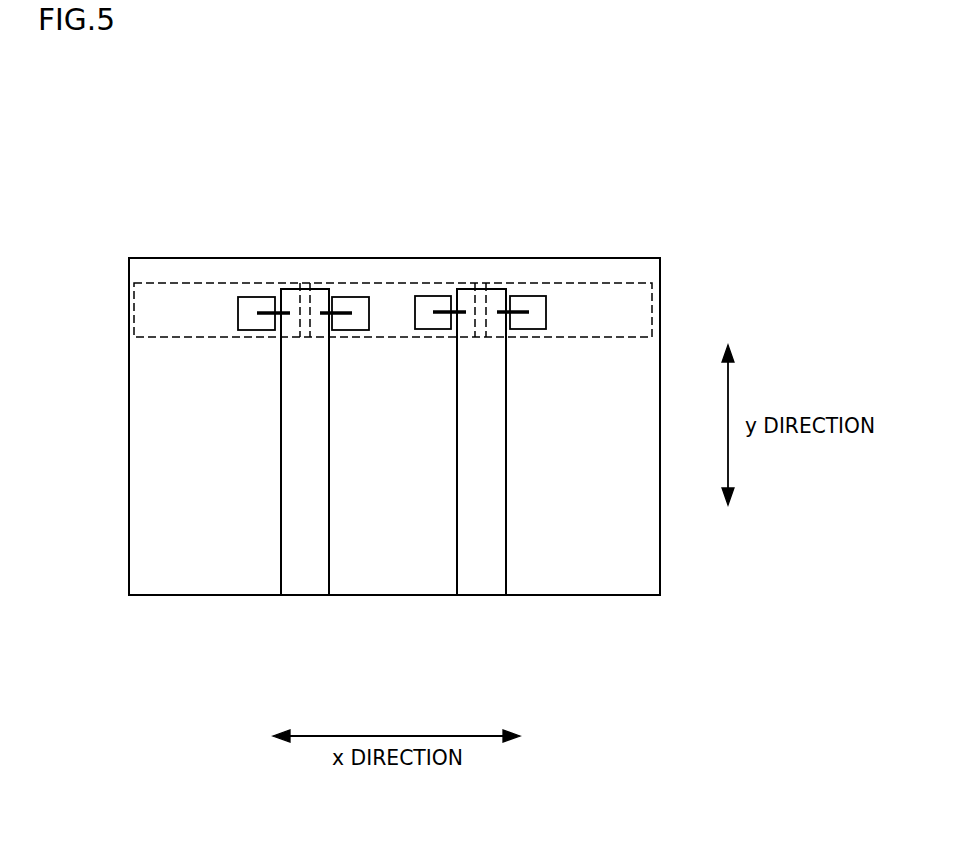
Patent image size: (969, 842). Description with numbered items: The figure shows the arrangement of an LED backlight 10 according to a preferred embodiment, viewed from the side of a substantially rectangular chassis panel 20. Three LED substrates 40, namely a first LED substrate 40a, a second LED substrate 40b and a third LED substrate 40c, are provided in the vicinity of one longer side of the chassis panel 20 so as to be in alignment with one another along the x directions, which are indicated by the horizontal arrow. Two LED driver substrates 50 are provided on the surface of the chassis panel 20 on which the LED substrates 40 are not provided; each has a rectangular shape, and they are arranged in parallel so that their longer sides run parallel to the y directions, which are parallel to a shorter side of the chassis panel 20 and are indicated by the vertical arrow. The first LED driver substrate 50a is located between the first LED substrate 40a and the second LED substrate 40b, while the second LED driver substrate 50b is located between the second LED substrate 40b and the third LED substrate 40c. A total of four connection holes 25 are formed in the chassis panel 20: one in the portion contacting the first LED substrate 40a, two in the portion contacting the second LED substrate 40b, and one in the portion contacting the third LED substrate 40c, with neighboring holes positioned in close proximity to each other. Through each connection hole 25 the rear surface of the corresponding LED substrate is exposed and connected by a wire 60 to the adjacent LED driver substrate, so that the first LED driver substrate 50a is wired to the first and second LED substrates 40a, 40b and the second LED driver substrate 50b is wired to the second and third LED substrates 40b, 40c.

The LED backlight 10 is at (634, 171).
The chassis panel 20 is at (546, 583).
The connection hole 25 is at (238, 316).
The LED substrate 40 is at (557, 165).
The first LED substrate 40a is at (197, 295).
The second LED substrate 40b is at (393, 296).
The third LED substrate 40c is at (568, 292).
The LED driver substrate 50 is at (467, 642).
The first LED driver substrate 50a is at (319, 541).
The second LED driver substrate 50b is at (465, 550).
The wire 60 is at (323, 311).